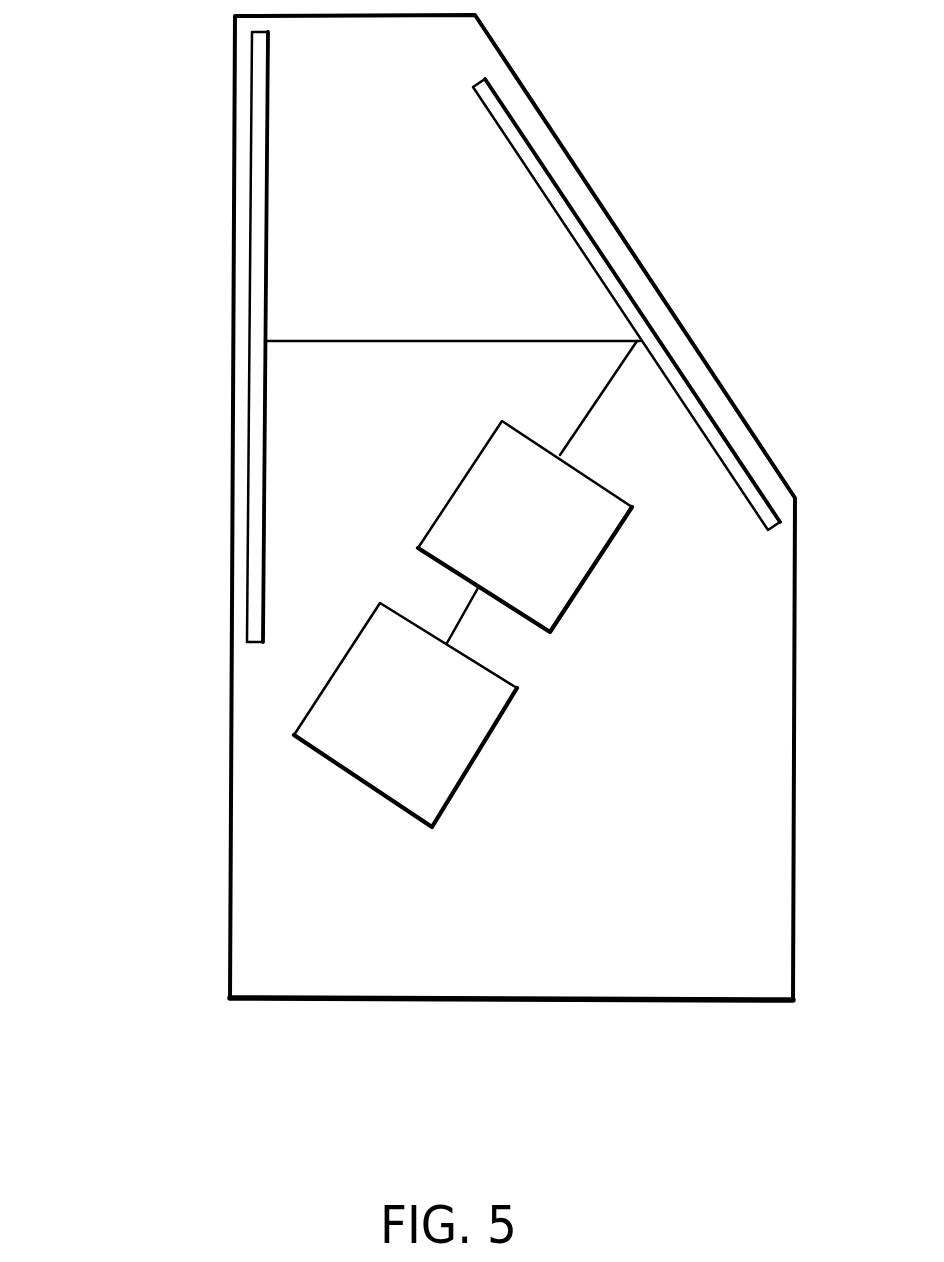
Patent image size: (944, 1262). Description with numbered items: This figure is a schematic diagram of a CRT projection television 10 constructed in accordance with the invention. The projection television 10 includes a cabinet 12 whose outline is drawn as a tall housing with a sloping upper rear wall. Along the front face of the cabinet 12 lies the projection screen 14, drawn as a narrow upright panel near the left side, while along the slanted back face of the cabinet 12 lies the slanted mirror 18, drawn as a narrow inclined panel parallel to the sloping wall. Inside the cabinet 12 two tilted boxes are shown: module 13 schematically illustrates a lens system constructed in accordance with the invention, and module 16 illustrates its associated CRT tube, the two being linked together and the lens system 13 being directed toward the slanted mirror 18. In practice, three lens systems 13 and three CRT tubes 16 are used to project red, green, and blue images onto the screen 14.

The CRT projection television 10 is at (140, 589).
The cabinet 12 is at (793, 708).
The lens system module 13 is at (587, 577).
The projection screen 14 is at (265, 175).
The CRT tube module 16 is at (477, 757).
The slanted mirror 18 is at (527, 175).